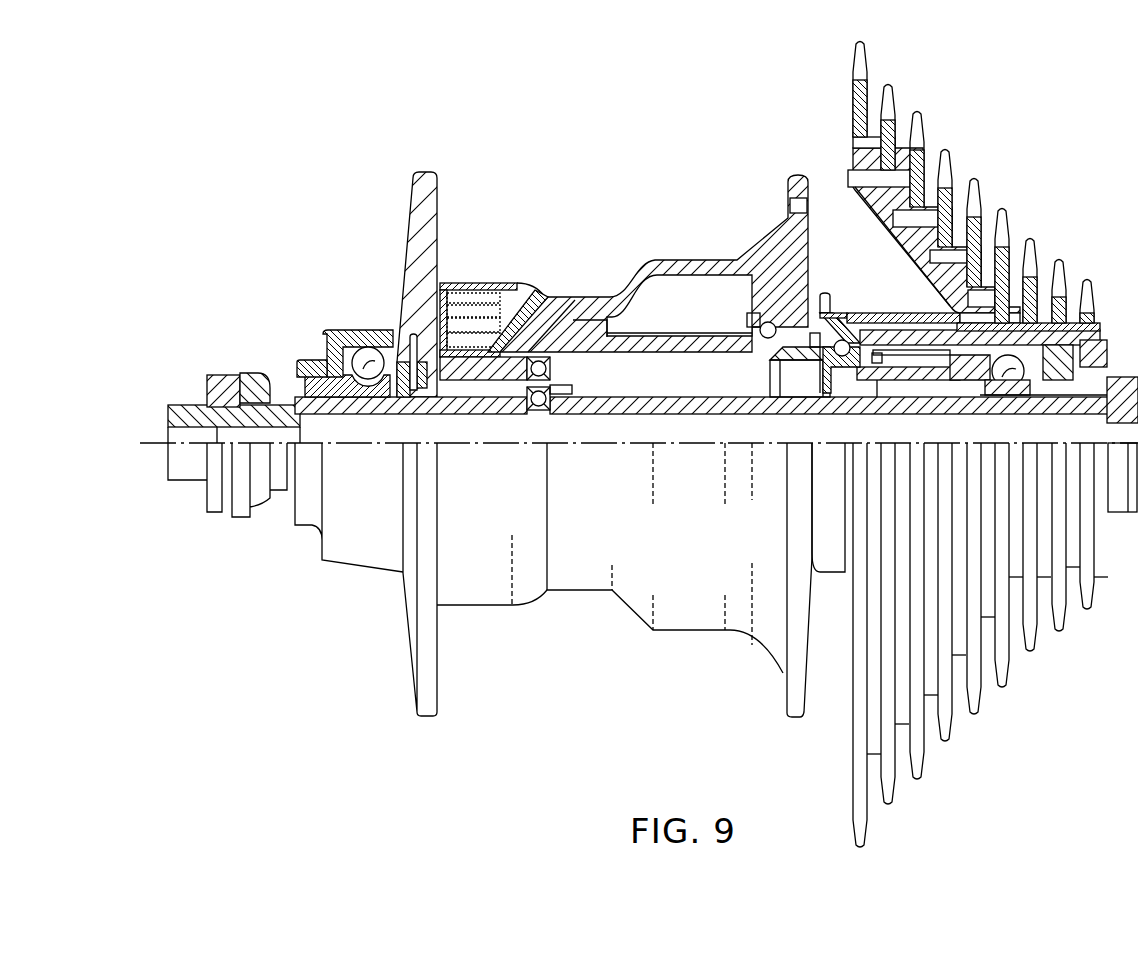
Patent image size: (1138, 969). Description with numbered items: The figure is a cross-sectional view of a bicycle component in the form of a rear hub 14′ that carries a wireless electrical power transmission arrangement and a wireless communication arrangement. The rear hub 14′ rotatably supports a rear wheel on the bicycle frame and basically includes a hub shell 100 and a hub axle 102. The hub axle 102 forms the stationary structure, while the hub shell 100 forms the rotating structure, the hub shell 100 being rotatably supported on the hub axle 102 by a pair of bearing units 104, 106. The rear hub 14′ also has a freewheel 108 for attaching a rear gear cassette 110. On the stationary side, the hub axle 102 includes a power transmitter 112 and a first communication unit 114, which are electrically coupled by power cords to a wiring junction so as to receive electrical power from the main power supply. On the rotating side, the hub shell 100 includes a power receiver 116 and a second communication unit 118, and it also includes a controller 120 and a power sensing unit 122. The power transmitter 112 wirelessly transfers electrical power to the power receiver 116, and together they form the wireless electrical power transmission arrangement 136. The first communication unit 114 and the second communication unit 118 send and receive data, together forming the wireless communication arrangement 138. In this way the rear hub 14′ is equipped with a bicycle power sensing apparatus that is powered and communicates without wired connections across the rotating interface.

The rear hub 14′ is at (563, 212).
The hub shell 100 is at (408, 222).
The hub axle 102 is at (696, 396).
The bearing unit 104 is at (338, 327).
The bearing unit 106 is at (988, 394).
The freewheel 108 is at (877, 318).
The rear gear cassette 110 is at (1036, 139).
The power transmitter 112 is at (404, 340).
The first communication unit 114 is at (568, 388).
The power receiver 116 is at (447, 373).
The second communication unit 118 is at (570, 360).
The controller 120 is at (475, 282).
The power sensing unit 122 is at (693, 312).
The wireless electrical power transmission arrangement 136 is at (422, 424).
The wireless communication arrangement 138 is at (550, 418).